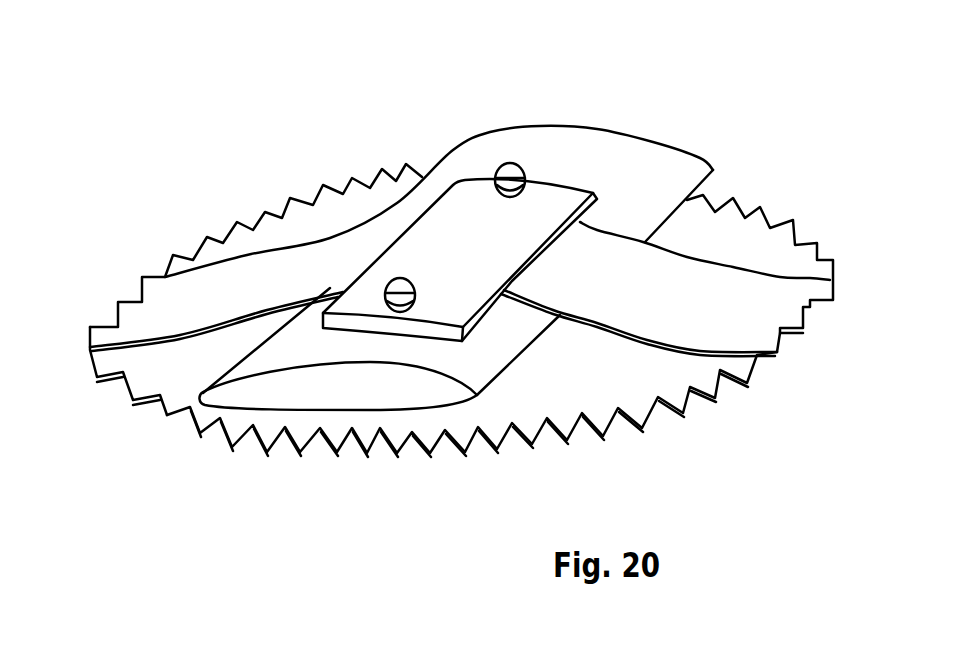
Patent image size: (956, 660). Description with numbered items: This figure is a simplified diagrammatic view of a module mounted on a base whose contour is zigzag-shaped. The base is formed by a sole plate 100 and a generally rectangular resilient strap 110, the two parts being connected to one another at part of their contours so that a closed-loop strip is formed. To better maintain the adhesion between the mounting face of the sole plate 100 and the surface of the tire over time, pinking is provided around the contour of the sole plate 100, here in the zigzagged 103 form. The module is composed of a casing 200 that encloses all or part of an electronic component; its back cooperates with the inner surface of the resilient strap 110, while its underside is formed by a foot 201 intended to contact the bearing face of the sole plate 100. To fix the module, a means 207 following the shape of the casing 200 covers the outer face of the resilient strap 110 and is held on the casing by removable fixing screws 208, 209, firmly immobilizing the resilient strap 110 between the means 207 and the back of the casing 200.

The sole plate 100 is at (180, 377).
The zigzagged pinking 103 is at (670, 410).
The resilient strap 110 is at (697, 277).
The casing 200 is at (368, 388).
The foot 201 is at (354, 188).
The means 207 is at (440, 227).
The fixing screw 208 is at (385, 293).
The fixing screw 209 is at (505, 172).